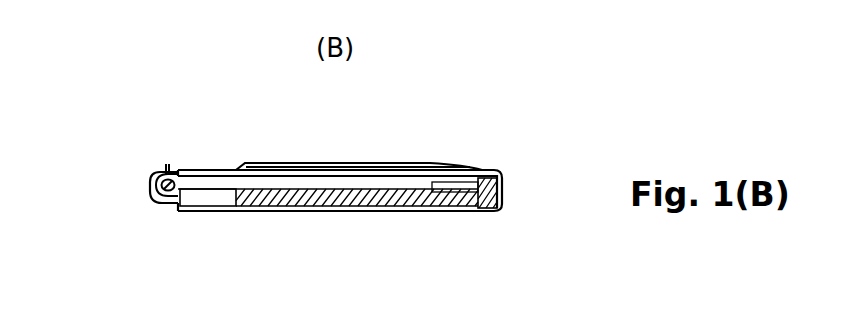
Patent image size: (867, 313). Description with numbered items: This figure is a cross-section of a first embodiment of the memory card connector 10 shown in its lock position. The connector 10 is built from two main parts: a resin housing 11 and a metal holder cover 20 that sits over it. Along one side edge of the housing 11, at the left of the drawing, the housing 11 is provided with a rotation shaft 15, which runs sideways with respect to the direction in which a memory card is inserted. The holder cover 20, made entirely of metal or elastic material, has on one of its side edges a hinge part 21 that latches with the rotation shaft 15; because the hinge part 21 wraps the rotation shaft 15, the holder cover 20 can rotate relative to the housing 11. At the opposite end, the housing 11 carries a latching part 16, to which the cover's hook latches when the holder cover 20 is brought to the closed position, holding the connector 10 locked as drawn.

The memory card connector 10 is at (507, 140).
The housing 11 is at (437, 212).
The rotation shaft 15 is at (152, 196).
The latching part 16 is at (485, 211).
The holder cover 20 is at (503, 172).
The hinge part 21 is at (178, 208).